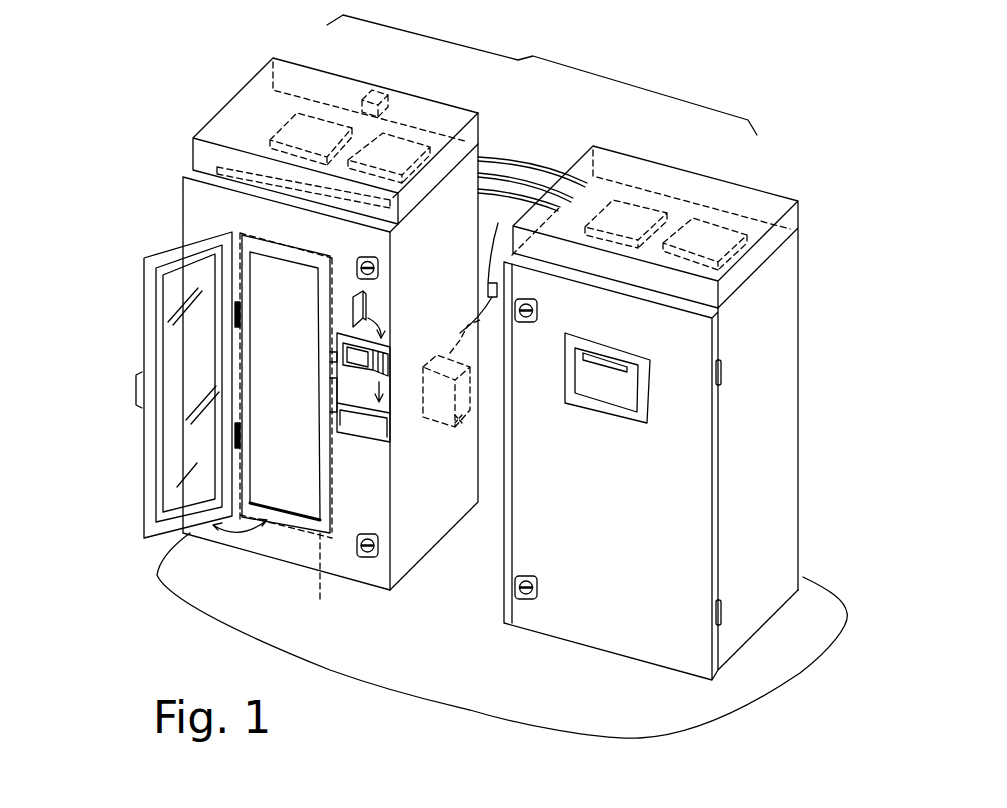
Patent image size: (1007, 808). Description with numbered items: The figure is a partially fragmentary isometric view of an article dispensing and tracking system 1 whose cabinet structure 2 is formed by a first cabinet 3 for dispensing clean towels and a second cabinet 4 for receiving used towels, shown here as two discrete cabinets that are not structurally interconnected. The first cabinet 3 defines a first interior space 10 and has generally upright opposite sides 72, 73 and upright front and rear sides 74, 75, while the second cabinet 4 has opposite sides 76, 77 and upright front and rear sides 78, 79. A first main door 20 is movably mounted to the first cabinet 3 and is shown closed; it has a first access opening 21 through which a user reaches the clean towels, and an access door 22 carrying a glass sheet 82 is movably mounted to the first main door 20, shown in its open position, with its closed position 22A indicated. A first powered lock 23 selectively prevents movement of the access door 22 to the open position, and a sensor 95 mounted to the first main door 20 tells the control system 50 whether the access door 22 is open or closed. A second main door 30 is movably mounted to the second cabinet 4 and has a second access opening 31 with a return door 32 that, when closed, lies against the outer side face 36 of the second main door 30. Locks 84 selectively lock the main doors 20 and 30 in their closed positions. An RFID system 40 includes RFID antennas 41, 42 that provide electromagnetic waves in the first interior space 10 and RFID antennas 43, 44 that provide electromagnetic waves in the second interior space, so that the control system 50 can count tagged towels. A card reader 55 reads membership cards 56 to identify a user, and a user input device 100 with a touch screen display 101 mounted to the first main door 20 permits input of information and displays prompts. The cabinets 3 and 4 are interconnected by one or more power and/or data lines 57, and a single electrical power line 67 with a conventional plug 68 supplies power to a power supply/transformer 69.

The article dispensing and tracking system 1 is at (818, 157).
The cabinet structure 2 is at (542, 75).
The first cabinet 3 is at (182, 197).
The second cabinet 4 is at (800, 322).
The first interior space 10 is at (300, 389).
The first main door 20 is at (297, 500).
The first access opening 21 is at (193, 538).
The access door 22 is at (128, 385).
The closed position of access door 22A is at (295, 433).
The first powered lock 23 is at (137, 390).
The second main door 30 is at (612, 655).
The second access opening 31 is at (623, 423).
The return door 32 is at (620, 375).
The outer side face 36 is at (662, 647).
The RFID system 40 is at (197, 157).
The RFID antenna 41 is at (308, 112).
The RFID antenna 42 is at (395, 137).
The RFID antenna 43 is at (647, 200).
The RFID antenna 44 is at (713, 230).
The control system 50 is at (238, 143).
The card reader 55 is at (364, 349).
The membership card 56 is at (367, 307).
The power and/or data lines 57 is at (513, 157).
The electrical power line 67 is at (482, 310).
The plug 68 is at (490, 265).
The power supply/transformer 69 is at (462, 425).
The side of first cabinet 72 is at (182, 223).
The side of first cabinet 73 is at (423, 545).
The front side of first cabinet 74 is at (185, 530).
The rear side of first cabinet 75 is at (480, 147).
The side of second cabinet 76 is at (503, 593).
The side of second cabinet 77 is at (752, 615).
The front side of second cabinet 78 is at (538, 632).
The rear side of second cabinet 79 is at (802, 468).
The glass sheet 82 is at (177, 362).
The lock 84 is at (360, 257).
The sensor 95 is at (240, 277).
The user input device 100 is at (365, 400).
The touch screen display 101 is at (350, 353).